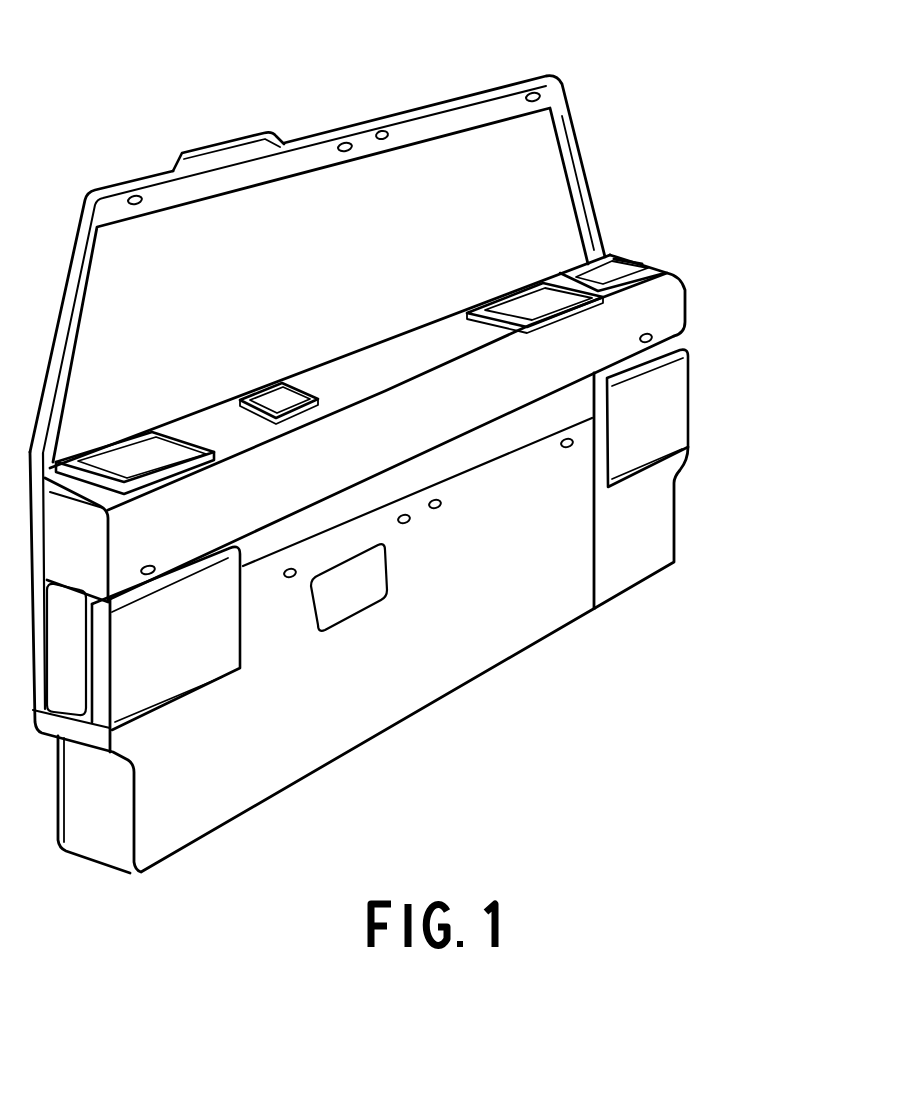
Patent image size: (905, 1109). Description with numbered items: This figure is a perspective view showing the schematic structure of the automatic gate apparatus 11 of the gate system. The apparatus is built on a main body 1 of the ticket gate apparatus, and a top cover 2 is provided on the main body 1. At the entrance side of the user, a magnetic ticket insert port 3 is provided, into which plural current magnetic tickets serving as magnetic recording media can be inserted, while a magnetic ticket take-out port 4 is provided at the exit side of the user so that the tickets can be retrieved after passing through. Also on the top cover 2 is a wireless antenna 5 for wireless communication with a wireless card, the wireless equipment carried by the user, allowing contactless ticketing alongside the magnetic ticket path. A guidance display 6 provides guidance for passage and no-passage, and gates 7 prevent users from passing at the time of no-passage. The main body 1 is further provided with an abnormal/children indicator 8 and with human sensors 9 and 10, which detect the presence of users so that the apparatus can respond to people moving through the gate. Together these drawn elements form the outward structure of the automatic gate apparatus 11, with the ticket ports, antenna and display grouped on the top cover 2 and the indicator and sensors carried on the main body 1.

The main body 1 is at (457, 682).
The top cover 2 is at (385, 357).
The magnetic ticket insert port 3 is at (627, 255).
The magnetic ticket take-out port 4 is at (263, 400).
The wireless antenna 5 is at (513, 295).
The guidance display 6 is at (148, 455).
The gates 7 is at (162, 688).
The abnormal/children indicator 8 is at (213, 146).
The human sensor 9 is at (135, 196).
The human sensor 10 is at (148, 566).
The automatic gate apparatus 11 is at (621, 91).